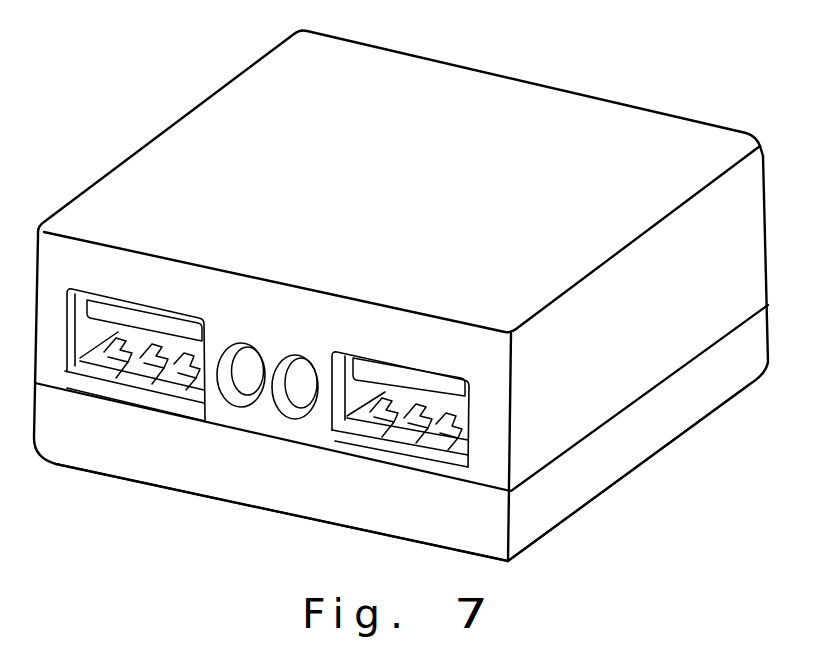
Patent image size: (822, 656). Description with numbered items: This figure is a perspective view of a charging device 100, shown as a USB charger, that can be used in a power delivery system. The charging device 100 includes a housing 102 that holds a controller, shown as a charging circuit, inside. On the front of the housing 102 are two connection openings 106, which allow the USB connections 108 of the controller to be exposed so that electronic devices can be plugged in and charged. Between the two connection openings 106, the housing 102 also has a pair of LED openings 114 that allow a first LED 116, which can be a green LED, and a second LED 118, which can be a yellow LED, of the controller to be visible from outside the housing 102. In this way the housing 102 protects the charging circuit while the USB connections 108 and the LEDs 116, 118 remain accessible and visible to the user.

The charging device 100 is at (645, 88).
The housing 102 is at (661, 431).
The connection openings 106 is at (205, 338).
The USB connections 108 is at (143, 322).
The LED openings 114 is at (302, 355).
The first LED 116 is at (300, 391).
The second LED 118 is at (245, 385).